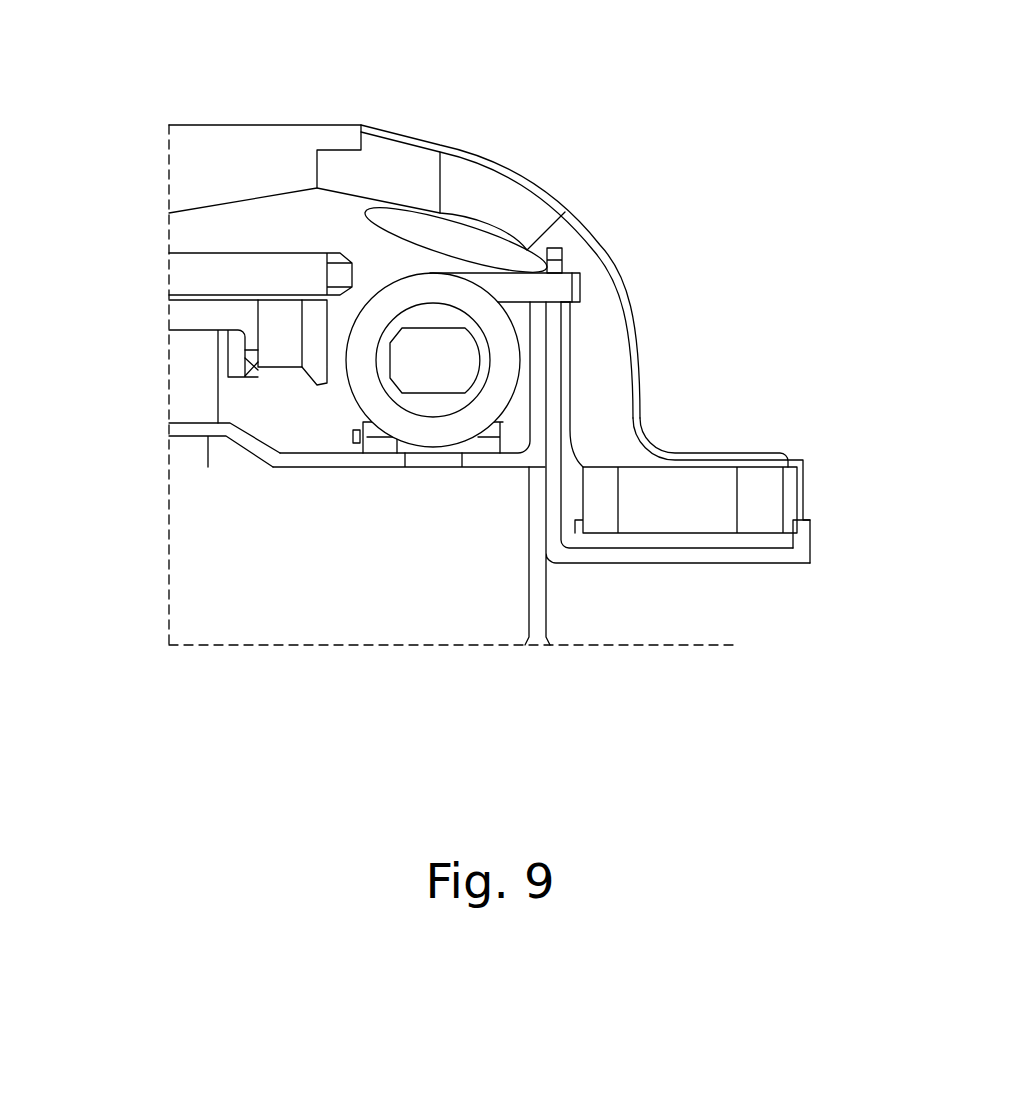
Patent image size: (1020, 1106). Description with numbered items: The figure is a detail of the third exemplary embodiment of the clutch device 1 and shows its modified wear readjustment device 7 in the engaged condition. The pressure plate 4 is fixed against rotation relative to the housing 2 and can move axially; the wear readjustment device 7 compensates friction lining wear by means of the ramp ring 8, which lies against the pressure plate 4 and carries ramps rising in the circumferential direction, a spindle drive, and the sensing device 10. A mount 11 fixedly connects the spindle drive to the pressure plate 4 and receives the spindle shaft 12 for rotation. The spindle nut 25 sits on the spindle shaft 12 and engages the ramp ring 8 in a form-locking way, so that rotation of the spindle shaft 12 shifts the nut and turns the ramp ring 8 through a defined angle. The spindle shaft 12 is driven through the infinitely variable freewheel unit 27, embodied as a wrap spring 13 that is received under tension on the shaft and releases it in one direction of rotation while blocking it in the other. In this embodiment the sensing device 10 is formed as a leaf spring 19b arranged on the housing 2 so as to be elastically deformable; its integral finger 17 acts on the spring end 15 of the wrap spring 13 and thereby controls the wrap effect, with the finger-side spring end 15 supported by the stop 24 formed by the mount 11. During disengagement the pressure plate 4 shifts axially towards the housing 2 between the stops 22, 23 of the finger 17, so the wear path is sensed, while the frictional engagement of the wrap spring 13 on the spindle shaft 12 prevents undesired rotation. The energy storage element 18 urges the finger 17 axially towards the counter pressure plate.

The clutch device 1 is at (596, 101).
The housing 2 is at (403, 183).
The pressure plate 4 is at (205, 596).
The wear readjustment device 7 is at (578, 398).
The ramp ring 8 is at (282, 340).
The sensing device 10 is at (673, 580).
The mount 11 is at (478, 462).
The spindle shaft 12 is at (432, 367).
The wrap spring 13 is at (402, 290).
The spring end 15 is at (570, 287).
The finger 17 is at (557, 460).
The energy storage element 18 is at (767, 574).
The leaf spring 19b is at (590, 553).
The stop 22 is at (553, 250).
The stop 23 is at (563, 312).
The stop 24 is at (573, 323).
The spindle nut 25 is at (338, 352).
The infinitely variable freewheel unit 27 is at (478, 250).